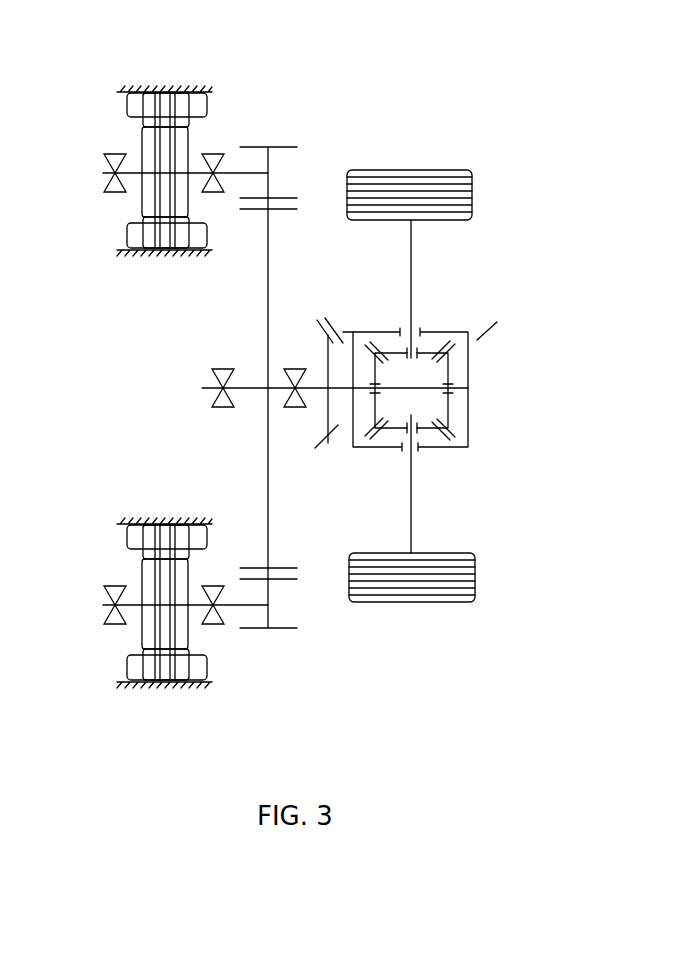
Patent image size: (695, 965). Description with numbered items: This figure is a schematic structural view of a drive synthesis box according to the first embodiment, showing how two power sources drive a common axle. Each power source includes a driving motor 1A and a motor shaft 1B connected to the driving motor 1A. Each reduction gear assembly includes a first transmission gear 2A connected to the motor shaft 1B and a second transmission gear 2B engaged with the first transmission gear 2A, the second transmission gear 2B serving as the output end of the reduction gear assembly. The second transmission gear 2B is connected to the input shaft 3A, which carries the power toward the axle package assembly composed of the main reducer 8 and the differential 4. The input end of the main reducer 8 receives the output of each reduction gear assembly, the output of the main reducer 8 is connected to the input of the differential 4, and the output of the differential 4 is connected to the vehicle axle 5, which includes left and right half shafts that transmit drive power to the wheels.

The driving motor 1A is at (127, 107).
The motor shaft 1B is at (227, 173).
The first transmission gear 2A is at (268, 163).
The second transmission gear 2B is at (270, 287).
The input shaft 3A is at (315, 392).
The differential 4 is at (477, 435).
The vehicle axle 5 is at (418, 270).
The main reducer 8 is at (328, 347).